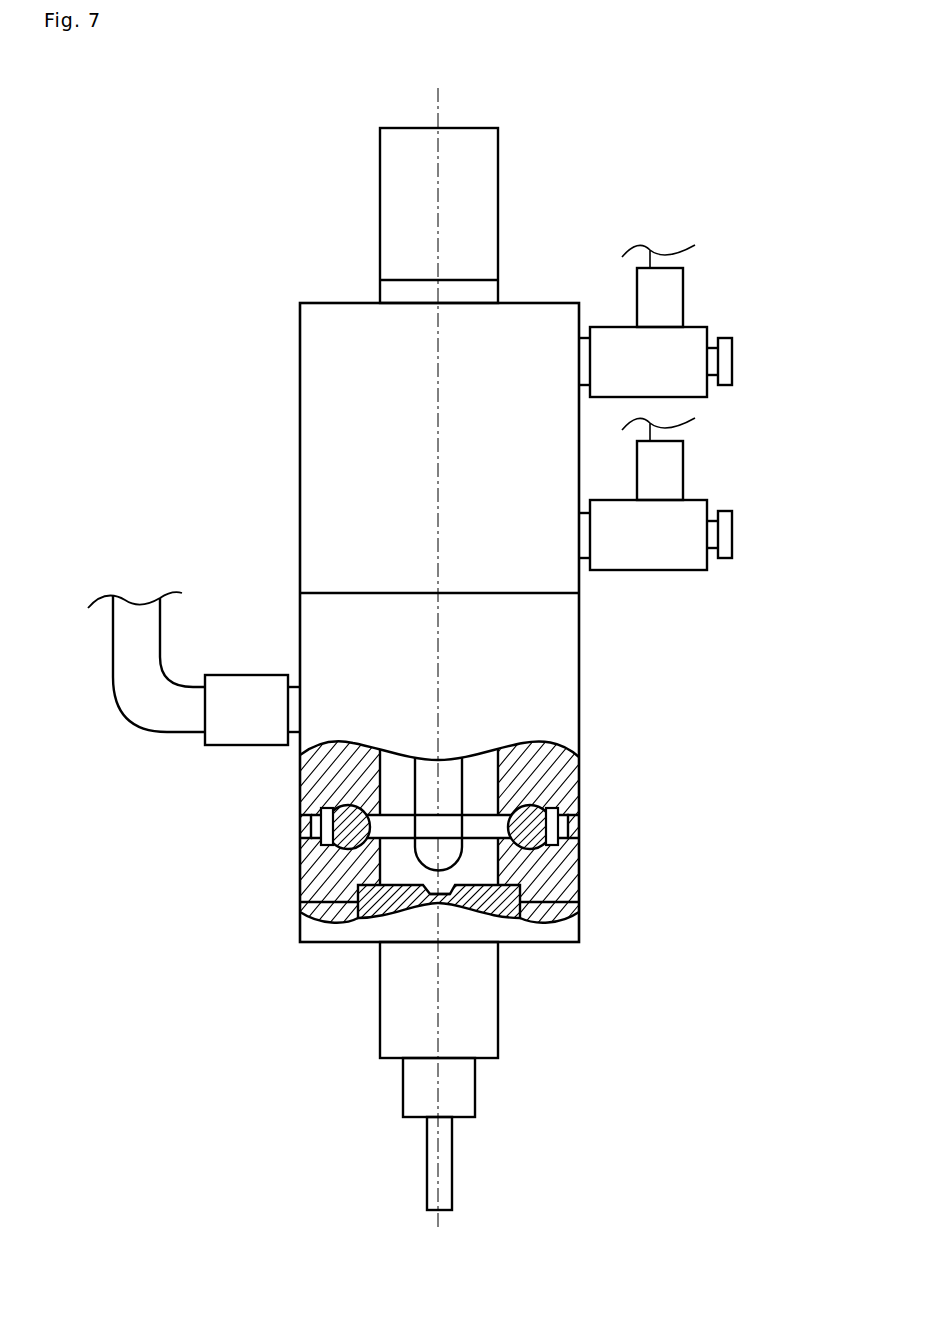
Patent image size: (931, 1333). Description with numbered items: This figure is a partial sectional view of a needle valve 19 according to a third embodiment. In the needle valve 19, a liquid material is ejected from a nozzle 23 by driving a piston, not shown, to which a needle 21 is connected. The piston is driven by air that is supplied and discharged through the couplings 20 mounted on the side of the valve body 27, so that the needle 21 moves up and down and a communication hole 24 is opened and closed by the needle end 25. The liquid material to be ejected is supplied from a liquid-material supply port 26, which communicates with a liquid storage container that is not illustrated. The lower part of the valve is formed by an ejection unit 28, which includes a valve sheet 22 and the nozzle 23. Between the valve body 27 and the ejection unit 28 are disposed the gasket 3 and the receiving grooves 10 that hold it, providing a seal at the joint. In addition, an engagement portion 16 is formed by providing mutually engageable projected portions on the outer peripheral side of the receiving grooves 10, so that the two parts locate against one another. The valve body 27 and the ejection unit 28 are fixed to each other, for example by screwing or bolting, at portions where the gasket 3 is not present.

The gasket 3 is at (368, 813).
The receiving grooves 10 is at (490, 801).
The engagement portion 16 is at (538, 823).
The needle valve 19 is at (338, 659).
The couplings 20 is at (686, 407).
The needle 21 is at (563, 783).
The valve sheet 22 is at (432, 835).
The nozzle 23 is at (531, 1134).
The communication hole 24 is at (583, 930).
The needle end 25 is at (510, 869).
The liquid-material supply port 26 is at (194, 644).
The valve body 27 is at (523, 622).
The ejection unit 28 is at (540, 901).